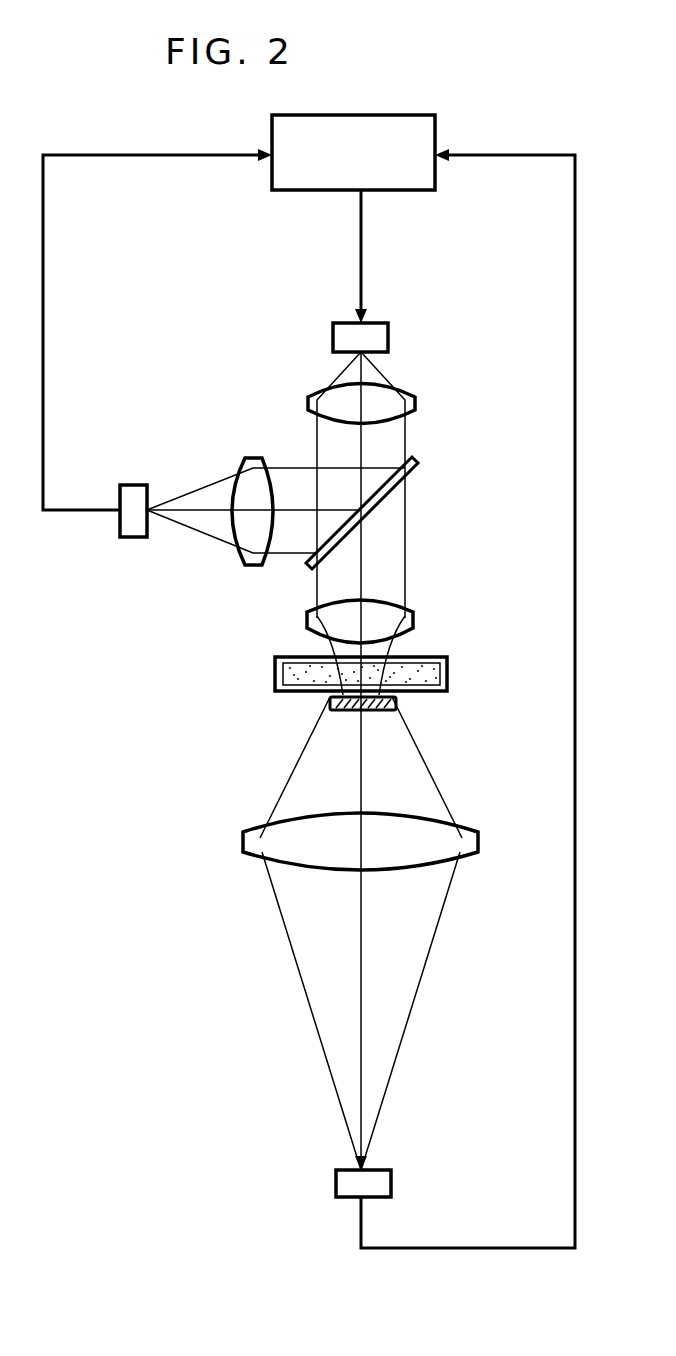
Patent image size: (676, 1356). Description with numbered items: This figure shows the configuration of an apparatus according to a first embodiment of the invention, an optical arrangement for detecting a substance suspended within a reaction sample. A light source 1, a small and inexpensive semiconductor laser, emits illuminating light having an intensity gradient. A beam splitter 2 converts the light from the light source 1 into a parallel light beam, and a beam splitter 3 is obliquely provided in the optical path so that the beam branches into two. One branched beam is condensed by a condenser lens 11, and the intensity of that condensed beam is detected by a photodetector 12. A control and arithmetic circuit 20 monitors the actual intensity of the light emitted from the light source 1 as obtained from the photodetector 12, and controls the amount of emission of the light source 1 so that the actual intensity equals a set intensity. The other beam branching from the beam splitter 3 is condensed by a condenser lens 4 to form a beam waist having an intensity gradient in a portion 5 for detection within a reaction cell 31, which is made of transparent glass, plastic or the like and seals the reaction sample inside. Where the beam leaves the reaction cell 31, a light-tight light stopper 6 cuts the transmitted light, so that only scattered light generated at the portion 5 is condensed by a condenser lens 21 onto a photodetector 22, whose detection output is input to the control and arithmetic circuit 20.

The control and arithmetic circuit 20 is at (368, 123).
The light source 1 is at (390, 330).
The beam splitter 2 is at (416, 392).
The beam splitter 3 is at (418, 460).
The photodetector 12 is at (133, 485).
The condenser lens 11 is at (251, 458).
The condenser lens 4 is at (416, 612).
The portion for detection 5 is at (385, 668).
The reaction cell 31 is at (448, 672).
The light stopper 6 is at (397, 704).
The condenser lens 21 is at (480, 840).
The photodetector 22 is at (392, 1180).